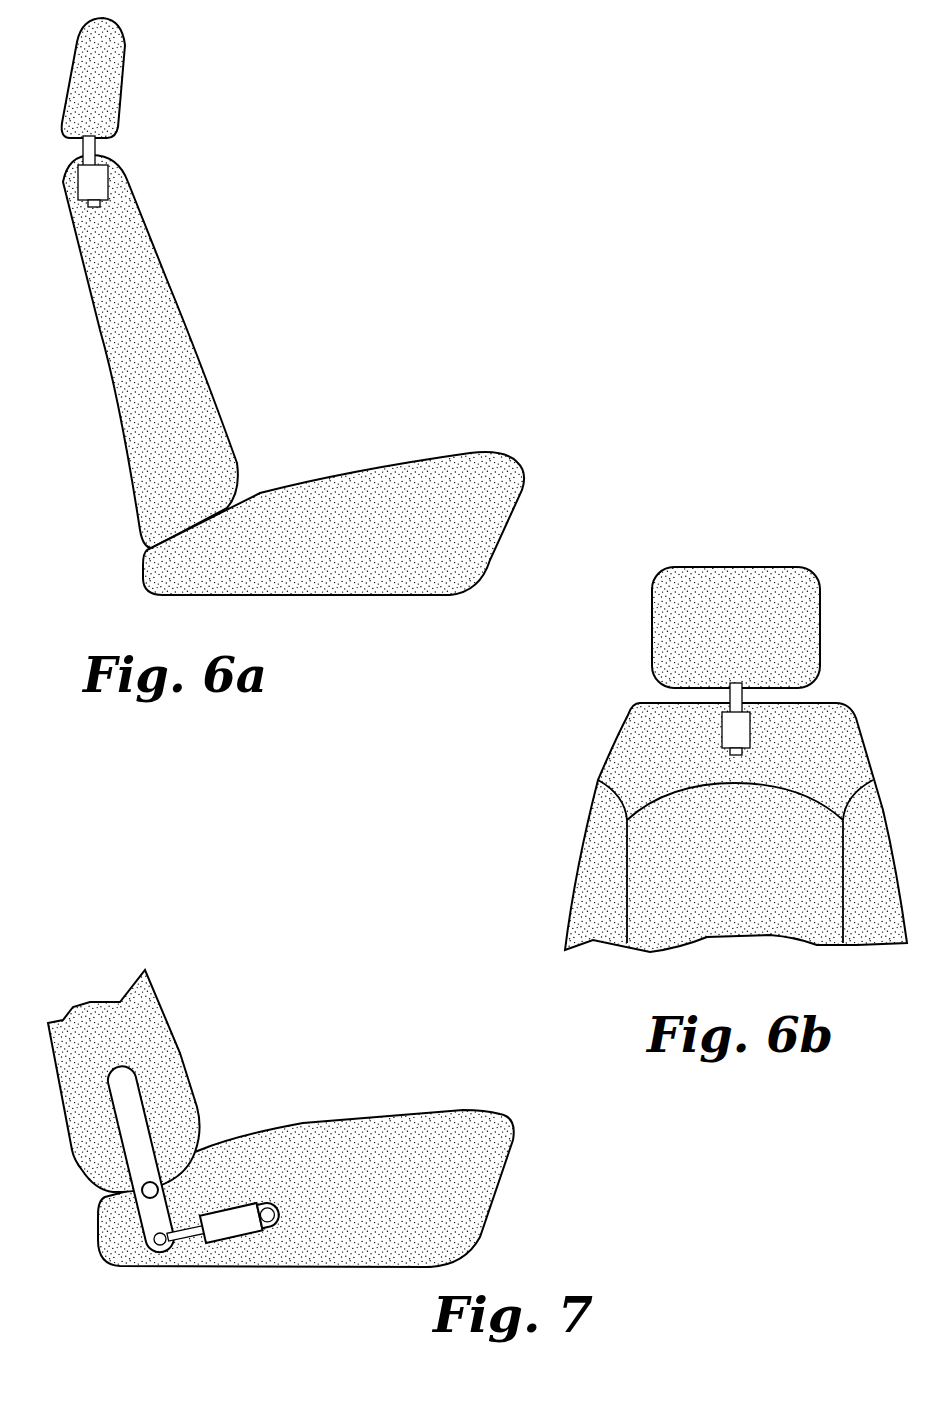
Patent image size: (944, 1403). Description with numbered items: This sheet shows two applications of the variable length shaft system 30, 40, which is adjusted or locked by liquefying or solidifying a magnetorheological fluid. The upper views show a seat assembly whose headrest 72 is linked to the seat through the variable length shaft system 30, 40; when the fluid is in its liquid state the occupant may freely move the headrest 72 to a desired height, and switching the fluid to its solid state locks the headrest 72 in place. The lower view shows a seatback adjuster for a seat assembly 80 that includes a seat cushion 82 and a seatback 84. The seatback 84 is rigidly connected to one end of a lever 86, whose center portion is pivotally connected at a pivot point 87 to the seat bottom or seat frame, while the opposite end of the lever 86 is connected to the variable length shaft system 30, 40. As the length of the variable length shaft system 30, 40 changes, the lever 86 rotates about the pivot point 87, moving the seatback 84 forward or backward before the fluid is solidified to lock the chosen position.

In FIG. 6A, the headrest 72 is at (128, 82).
In FIG. 6B, the headrest 72 is at (642, 629).
In FIG. 6A, the variable length shaft system 30 is at (184, 154).
In FIG. 6B, the variable length shaft system 30 is at (611, 739).
In FIG. 7, the variable length shaft system 30 is at (302, 1152).
In FIG. 6A, the variable length shaft system 40 is at (122, 182).
In FIG. 6B, the variable length shaft system 40 is at (710, 730).
In FIG. 7, the variable length shaft system 40 is at (259, 1184).
In FIG. 7, the seat assembly 80 is at (329, 1095).
In FIG. 7, the seat cushion 82 is at (492, 1217).
In FIG. 7, the seatback 84 is at (180, 1053).
In FIG. 7, the lever 86 is at (137, 1140).
In FIG. 7, the pivot point 87 is at (157, 1183).